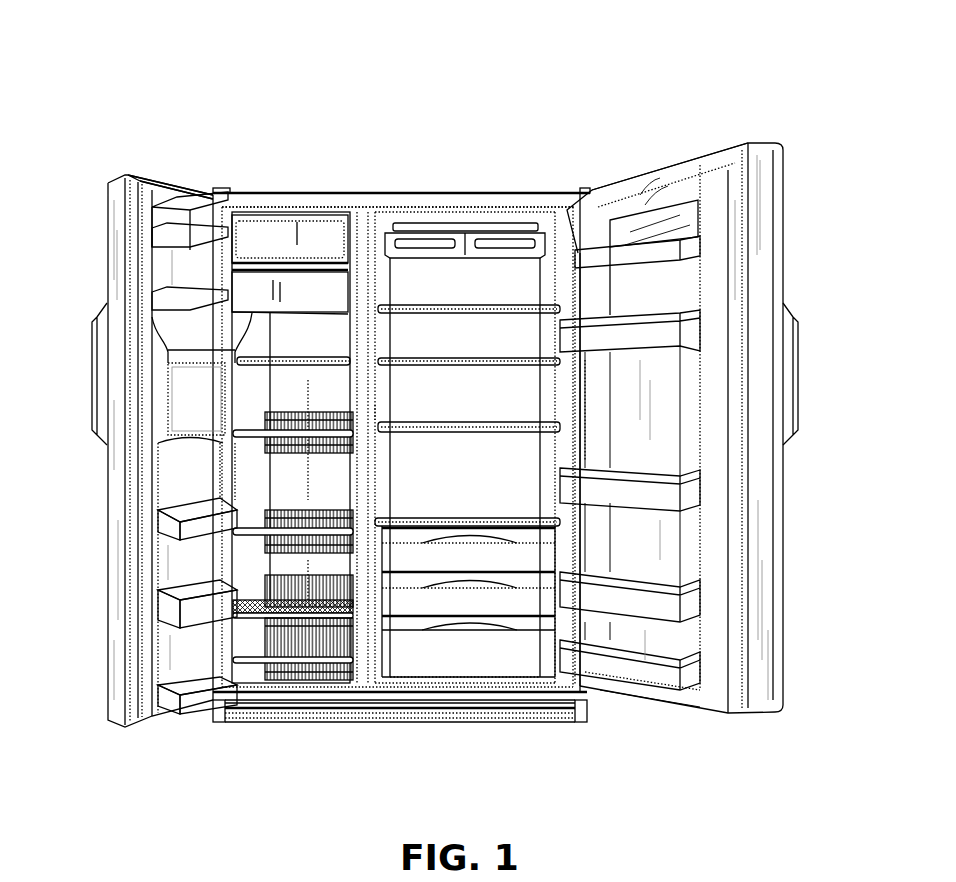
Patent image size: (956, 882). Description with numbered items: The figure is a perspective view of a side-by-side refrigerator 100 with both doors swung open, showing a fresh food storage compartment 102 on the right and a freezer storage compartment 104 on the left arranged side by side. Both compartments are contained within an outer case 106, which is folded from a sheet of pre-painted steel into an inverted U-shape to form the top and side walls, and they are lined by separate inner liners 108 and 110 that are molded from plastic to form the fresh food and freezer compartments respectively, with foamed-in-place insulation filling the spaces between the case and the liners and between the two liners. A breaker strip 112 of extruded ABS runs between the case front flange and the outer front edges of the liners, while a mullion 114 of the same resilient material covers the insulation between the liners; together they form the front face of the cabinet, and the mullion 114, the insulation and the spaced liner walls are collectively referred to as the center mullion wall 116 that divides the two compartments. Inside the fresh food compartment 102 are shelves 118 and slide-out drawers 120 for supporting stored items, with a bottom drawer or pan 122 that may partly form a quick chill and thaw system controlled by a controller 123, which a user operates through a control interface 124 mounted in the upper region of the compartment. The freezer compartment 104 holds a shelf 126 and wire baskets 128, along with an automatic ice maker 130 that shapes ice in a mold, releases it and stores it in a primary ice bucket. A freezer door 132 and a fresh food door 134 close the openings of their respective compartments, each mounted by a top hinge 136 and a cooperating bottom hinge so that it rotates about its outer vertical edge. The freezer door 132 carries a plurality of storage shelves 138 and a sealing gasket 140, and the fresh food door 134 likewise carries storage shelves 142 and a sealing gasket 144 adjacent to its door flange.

The side-by-side refrigerator 100 is at (468, 60).
The fresh food storage compartment 102 is at (547, 210).
The freezer storage compartment 104 is at (327, 240).
The outer case 106 is at (447, 188).
The inner liner 108 is at (498, 222).
The inner liner 110 is at (275, 215).
The breaker strip 112 is at (533, 203).
The mullion 114 is at (366, 414).
The center mullion wall 116 is at (390, 387).
The shelves 118 is at (423, 318).
The slide-out drawers 120 is at (485, 567).
The bottom drawer or pan 122 is at (485, 663).
The controller 123 is at (445, 238).
The control interface 124 is at (403, 227).
The shelf 126 is at (290, 363).
The wire basket 128 is at (267, 522).
The automatic ice maker 130 is at (288, 293).
The freezer door 132 is at (97, 226).
The fresh food door 134 is at (793, 195).
The top hinge 136 is at (220, 189).
The storage shelves 138 is at (168, 700).
The sealing gasket 140 is at (143, 183).
The storage shelves 142 is at (622, 353).
The sealing gasket 144 is at (712, 162).